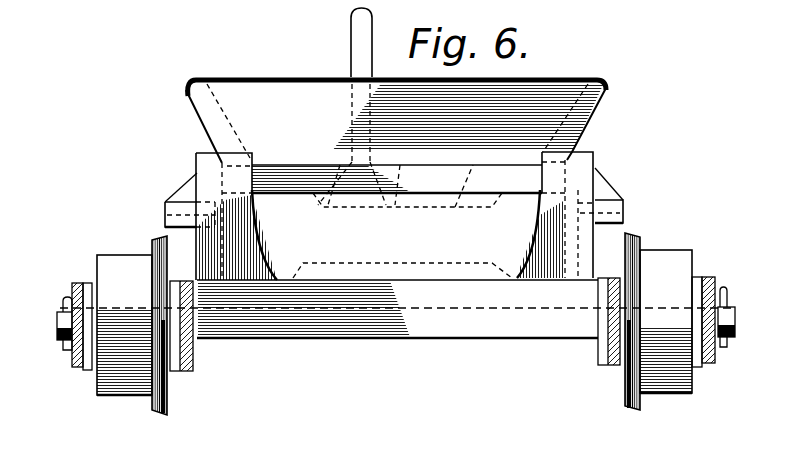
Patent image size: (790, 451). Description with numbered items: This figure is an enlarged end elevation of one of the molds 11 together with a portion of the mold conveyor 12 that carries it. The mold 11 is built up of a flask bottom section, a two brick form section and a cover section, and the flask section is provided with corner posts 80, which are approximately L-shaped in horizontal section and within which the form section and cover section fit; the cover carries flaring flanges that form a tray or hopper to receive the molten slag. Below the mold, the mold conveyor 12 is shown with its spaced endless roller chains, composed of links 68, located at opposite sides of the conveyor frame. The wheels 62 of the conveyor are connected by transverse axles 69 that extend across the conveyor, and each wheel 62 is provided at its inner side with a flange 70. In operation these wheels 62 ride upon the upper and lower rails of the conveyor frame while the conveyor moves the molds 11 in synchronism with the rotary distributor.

The mold 11 is at (207, 107).
The mold conveyor 12 is at (308, 332).
The wheel 62 is at (118, 268).
The link 68 is at (88, 283).
The transverse axle 69 is at (58, 325).
The flange 70 is at (157, 243).
The corner post 80 is at (210, 173).